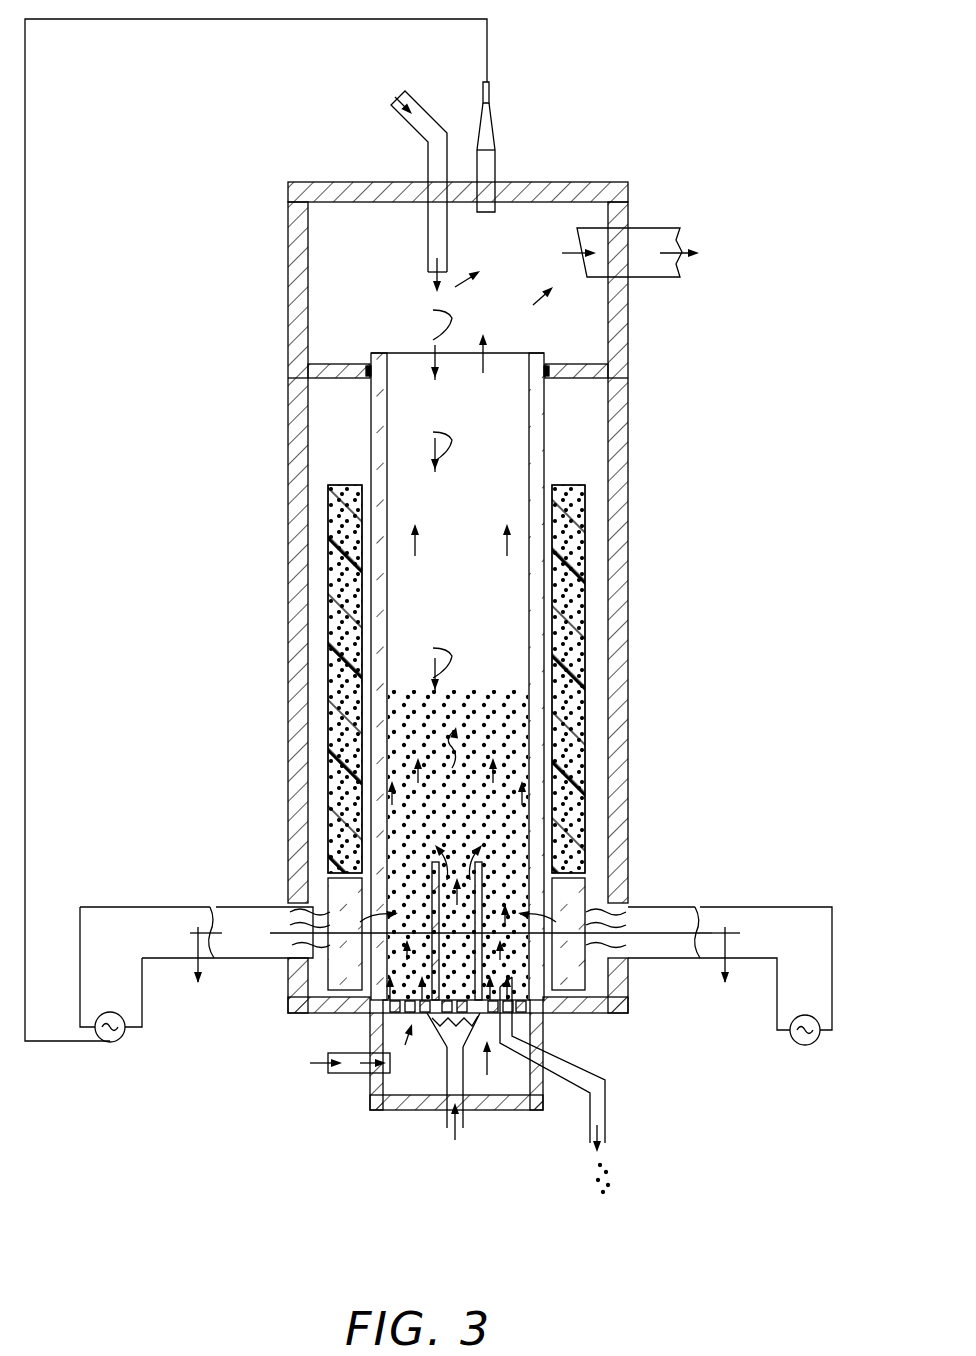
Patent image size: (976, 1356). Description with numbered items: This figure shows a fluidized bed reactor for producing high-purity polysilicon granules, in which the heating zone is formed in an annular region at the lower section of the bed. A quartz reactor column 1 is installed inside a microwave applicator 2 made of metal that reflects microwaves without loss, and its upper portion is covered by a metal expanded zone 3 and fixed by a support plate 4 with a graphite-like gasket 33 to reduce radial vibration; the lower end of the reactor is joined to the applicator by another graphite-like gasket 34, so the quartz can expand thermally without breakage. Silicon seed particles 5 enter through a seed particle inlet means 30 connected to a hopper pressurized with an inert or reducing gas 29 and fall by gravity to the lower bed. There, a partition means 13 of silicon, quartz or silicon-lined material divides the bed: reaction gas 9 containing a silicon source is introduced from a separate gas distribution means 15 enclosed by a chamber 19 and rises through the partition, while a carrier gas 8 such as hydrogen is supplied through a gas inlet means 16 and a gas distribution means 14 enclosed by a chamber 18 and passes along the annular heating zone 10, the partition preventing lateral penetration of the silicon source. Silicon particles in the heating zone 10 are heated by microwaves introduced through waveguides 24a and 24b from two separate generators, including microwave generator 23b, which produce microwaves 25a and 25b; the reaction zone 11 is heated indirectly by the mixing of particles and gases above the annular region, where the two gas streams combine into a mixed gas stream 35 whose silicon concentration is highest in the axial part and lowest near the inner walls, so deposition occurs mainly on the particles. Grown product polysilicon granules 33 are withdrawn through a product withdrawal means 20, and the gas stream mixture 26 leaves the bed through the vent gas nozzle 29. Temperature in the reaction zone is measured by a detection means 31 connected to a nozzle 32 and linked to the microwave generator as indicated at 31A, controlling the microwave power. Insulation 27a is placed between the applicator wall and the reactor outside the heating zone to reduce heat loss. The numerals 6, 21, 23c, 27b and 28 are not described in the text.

The quartz reactor column 1 is at (383, 634).
The microwave applicator 2 is at (288, 620).
The expanded zone 3 is at (288, 278).
The support plate 4 is at (350, 364).
The silicon seed particles 5 is at (451, 491).
The igniter 6 is at (435, 366).
The carrier gas 8 is at (490, 1078).
The reaction gas 9 is at (457, 1023).
The heating zone 10 is at (394, 917).
The reaction zone 11 is at (445, 840).
The partition means 13 is at (475, 948).
The gas distribution means 14 is at (397, 1033).
The gas distribution means 15 is at (468, 995).
The gas inlet means 16 is at (364, 1073).
The chamber 18 is at (418, 1110).
The chamber 19 is at (447, 1062).
The product withdrawal means 20 is at (585, 1077).
The discharge flow 21 is at (603, 1150).
The microwave generator 23b is at (808, 1045).
The AC power source 23c is at (112, 1042).
The waveguide 24a is at (229, 950).
The waveguide 24b is at (682, 955).
The microwave 25a is at (292, 925).
The microwave 25b is at (612, 936).
The gas stream mixture 26 is at (542, 297).
The insulation 27a is at (333, 484).
The electrode block 27b is at (326, 975).
The exhaust outlet 28 is at (700, 274).
The vent gas nozzle 29 is at (610, 265).
The seed particle inlet means 30 is at (425, 120).
The detection means 31 is at (489, 99).
The connection to microwave generator 31A is at (25, 478).
The nozzle 32 is at (492, 164).
The graphite-like gasket 33 is at (367, 378).
The graphite-like gasket 34 is at (368, 1008).
The mixed gas stream 35 is at (493, 777).